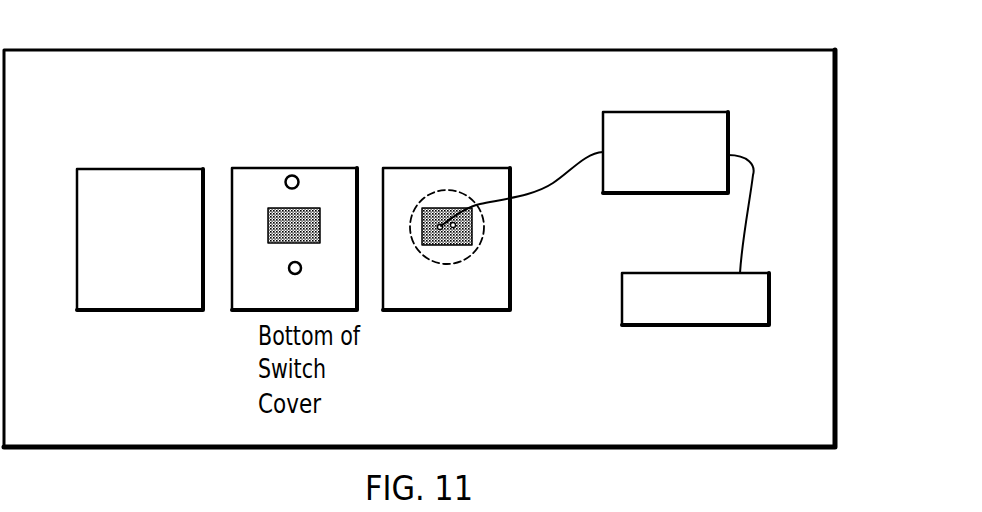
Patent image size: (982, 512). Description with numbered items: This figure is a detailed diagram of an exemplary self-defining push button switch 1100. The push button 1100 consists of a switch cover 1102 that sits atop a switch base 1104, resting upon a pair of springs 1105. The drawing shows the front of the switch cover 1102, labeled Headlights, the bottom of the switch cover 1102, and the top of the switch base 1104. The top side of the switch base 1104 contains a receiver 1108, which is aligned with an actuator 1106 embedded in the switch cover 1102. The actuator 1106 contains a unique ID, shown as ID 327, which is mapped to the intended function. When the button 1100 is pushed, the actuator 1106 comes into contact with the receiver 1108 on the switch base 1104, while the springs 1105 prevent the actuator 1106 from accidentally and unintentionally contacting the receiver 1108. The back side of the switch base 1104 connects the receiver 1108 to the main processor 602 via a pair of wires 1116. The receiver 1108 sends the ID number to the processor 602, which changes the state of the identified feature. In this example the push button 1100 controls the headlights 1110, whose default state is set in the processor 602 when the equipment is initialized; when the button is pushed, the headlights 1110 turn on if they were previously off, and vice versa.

The push button switch 1100 is at (816, 40).
The switch cover 1102 is at (100, 279).
The switch base 1104 is at (490, 292).
The springs 1105 is at (291, 264).
The actuator 1106 is at (298, 208).
The receiver 1108 is at (460, 178).
The headlights 1110 is at (667, 271).
The wires 1116 is at (552, 183).
The main processor 602 is at (728, 133).
The switch identifier ID 327 is at (420, 219).